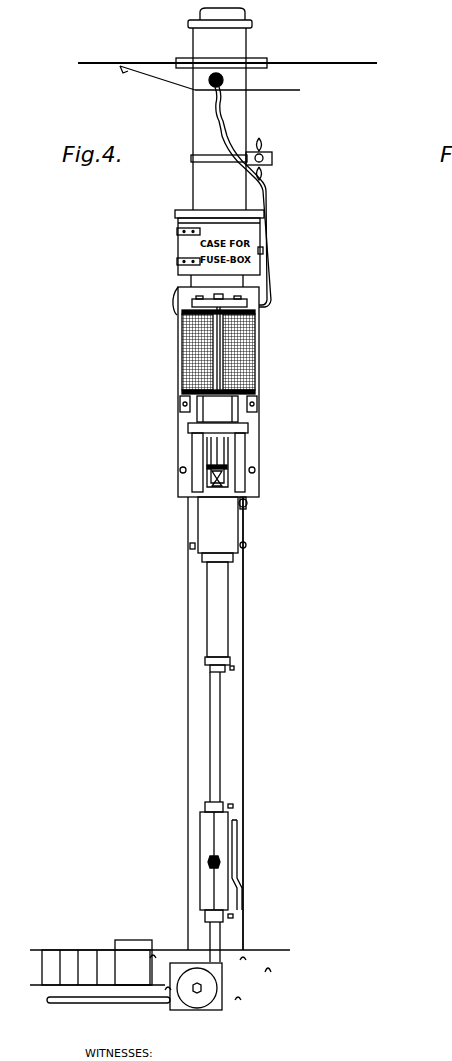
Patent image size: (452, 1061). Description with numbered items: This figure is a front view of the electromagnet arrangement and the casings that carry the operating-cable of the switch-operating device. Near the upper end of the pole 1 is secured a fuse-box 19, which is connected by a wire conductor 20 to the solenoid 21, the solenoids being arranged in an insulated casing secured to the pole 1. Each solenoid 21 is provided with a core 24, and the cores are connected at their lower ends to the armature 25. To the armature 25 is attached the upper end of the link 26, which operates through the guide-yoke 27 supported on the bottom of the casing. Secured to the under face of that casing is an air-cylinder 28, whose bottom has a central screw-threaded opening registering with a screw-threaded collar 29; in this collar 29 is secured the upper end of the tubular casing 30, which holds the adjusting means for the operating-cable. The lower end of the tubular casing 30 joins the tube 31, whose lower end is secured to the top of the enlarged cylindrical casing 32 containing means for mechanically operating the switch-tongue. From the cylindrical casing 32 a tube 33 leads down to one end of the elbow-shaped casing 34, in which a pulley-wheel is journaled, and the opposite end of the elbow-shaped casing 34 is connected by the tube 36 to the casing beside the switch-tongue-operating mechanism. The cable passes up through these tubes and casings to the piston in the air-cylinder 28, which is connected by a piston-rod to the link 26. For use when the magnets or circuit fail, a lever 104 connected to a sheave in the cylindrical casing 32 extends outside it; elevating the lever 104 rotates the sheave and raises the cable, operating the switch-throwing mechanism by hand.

The pole 1 is at (220, 479).
The fuse-box 19 is at (178, 227).
The wire conductor 20 is at (178, 263).
The solenoid 21 is at (182, 355).
The core 24 is at (197, 412).
The armature 25 is at (188, 430).
The link 26 is at (216, 452).
The guide-yoke 27 is at (207, 481).
The air-cylinder 28 is at (218, 525).
The screw-threaded collar 29 is at (202, 558).
The tubular casing 30 is at (207, 607).
The tube 31 is at (210, 728).
The enlarged cylindrical casing 32 is at (206, 833).
The lever 104 is at (238, 850).
The tube 33 is at (210, 930).
The elbow-shaped casing 34 is at (208, 1010).
The tube 36 is at (100, 1004).